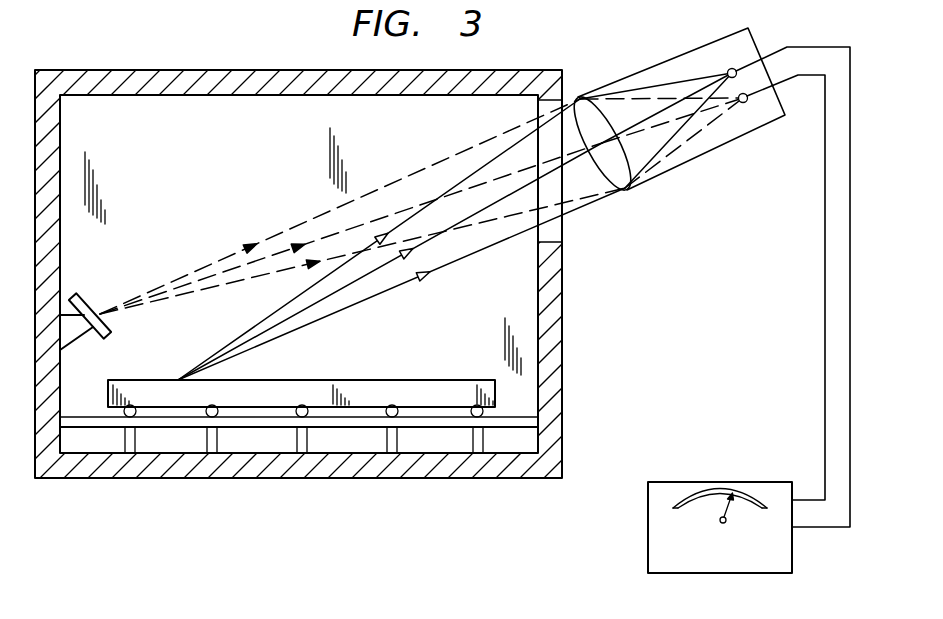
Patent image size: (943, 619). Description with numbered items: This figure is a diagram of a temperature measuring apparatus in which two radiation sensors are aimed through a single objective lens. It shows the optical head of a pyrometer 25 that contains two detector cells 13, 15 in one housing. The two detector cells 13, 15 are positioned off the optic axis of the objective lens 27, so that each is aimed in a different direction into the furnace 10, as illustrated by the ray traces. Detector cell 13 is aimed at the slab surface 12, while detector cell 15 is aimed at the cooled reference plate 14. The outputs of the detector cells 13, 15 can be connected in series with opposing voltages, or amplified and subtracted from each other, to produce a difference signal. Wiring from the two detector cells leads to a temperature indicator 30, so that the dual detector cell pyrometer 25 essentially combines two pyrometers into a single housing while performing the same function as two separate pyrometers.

The furnace 10 is at (218, 70).
The slab surface 12 is at (432, 380).
The cooled reference plate 14 is at (87, 297).
The pyrometer 25 is at (682, 65).
The objective lens 27 is at (627, 190).
The detector cell 13 is at (733, 69).
The detector cell 15 is at (744, 103).
The temperature indicator 30 is at (712, 482).